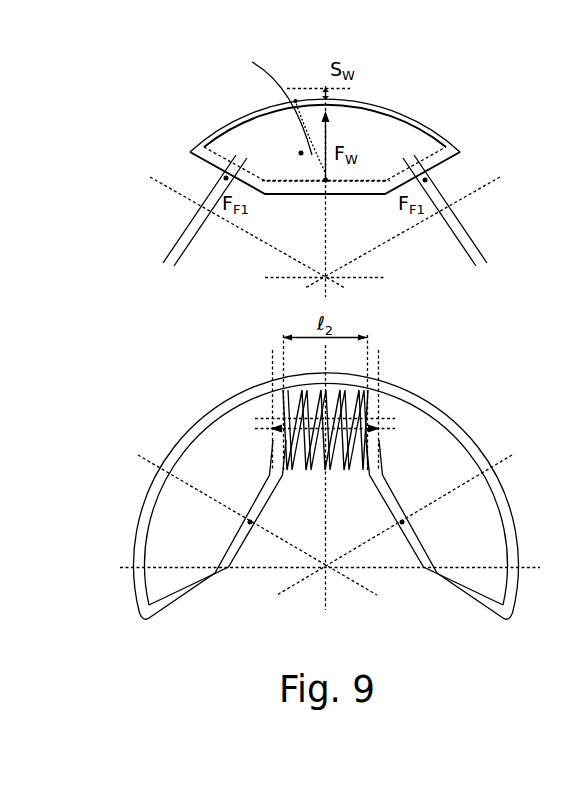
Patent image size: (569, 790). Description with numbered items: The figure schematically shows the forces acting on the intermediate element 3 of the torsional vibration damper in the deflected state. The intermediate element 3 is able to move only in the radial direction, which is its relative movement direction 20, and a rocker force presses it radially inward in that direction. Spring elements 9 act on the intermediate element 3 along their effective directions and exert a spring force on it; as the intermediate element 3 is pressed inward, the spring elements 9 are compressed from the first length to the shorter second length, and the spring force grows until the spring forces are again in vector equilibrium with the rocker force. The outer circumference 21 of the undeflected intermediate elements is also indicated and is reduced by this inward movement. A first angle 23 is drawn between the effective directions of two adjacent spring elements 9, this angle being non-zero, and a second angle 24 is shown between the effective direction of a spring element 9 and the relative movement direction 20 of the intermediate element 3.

The intermediate element 3 is at (393, 125).
The spring element 9 is at (336, 386).
The relative movement direction 20 is at (330, 205).
The outer circumference 21 is at (447, 418).
The first angle 23 is at (301, 153).
The second angle 24 is at (296, 101).